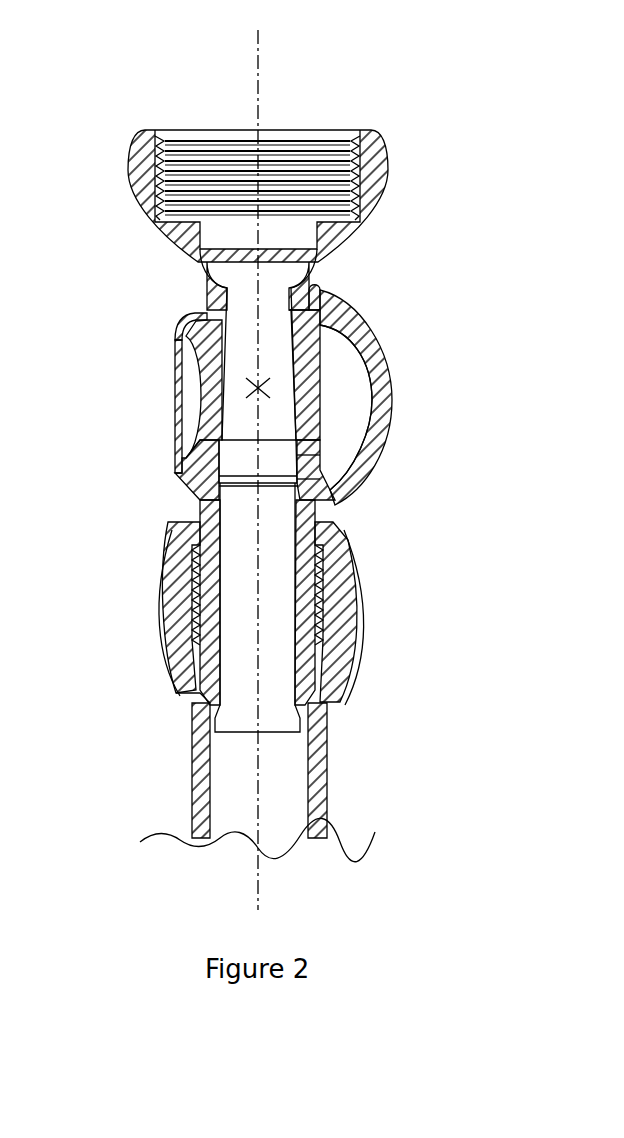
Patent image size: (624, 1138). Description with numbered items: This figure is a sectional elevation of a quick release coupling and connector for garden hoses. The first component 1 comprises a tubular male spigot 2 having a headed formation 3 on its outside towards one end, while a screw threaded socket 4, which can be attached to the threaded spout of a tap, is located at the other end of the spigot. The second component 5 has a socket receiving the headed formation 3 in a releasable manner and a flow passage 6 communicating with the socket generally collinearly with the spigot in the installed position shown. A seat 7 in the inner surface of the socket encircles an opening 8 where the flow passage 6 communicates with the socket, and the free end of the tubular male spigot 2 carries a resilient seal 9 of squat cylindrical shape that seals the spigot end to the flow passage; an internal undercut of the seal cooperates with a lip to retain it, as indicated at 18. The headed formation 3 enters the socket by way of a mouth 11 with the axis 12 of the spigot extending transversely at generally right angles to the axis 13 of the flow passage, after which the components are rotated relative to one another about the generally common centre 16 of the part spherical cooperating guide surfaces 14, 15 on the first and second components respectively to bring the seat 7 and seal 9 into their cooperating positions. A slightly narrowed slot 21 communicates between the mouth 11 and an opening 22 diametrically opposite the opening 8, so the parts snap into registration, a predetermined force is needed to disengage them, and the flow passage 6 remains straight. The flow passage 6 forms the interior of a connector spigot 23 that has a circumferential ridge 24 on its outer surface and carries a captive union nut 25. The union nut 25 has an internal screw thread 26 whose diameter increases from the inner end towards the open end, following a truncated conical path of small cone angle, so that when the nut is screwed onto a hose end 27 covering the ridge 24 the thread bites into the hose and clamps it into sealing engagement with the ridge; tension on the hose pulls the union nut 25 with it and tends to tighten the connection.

The first component 1 is at (401, 160).
The tubular male spigot 2 is at (298, 293).
The headed formation 3 is at (317, 332).
The screw threaded socket 4 is at (362, 191).
The second component 5 is at (397, 420).
The flow passage 6 is at (272, 528).
The seat 7 is at (260, 485).
The opening 8 is at (296, 484).
The resilient seal 9 is at (305, 462).
The mouth 11 is at (175, 402).
The axis of the tubular male spigot 12 is at (262, 104).
The axis of the flow passage 13 is at (258, 740).
The guide surface 14 is at (343, 327).
The guide surface 15 is at (350, 373).
The common centre 16 is at (258, 388).
The seal retaining arrangement 18 is at (330, 449).
The narrowed slot 21 is at (205, 312).
The opening 22 is at (318, 284).
The connector spigot 23 is at (303, 601).
The circumferential ridge 24 is at (312, 680).
The union nut 25 is at (183, 577).
The internal screw thread 26 is at (183, 606).
The hose end 27 is at (190, 689).